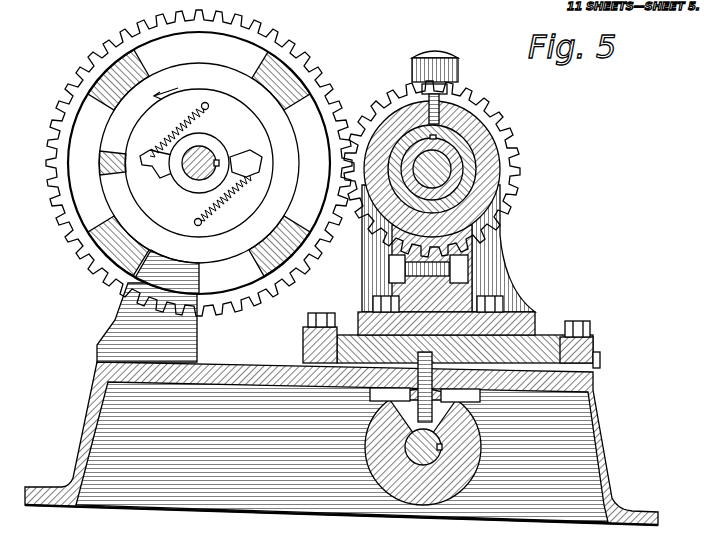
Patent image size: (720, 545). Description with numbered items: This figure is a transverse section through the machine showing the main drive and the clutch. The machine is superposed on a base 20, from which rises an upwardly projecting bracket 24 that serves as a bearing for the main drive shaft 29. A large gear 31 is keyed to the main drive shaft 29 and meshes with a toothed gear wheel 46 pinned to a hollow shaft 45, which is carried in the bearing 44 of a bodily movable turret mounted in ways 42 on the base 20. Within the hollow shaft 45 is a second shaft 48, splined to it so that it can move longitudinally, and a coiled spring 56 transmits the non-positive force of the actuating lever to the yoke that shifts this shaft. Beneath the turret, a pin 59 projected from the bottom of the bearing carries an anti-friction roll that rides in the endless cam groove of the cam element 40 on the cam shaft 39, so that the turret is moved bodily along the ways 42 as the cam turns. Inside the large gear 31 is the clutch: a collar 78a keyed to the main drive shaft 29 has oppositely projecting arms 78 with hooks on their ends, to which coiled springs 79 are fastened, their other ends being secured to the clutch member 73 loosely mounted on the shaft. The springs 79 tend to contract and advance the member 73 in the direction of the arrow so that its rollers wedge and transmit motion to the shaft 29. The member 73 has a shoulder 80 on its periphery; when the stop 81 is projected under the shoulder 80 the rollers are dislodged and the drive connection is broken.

The base 20 is at (602, 436).
The upwardly projecting bracket 24 is at (198, 340).
The main drive shaft 29 is at (218, 141).
The large gear 31 is at (272, 35).
The cam shaft 39 is at (372, 460).
The cam element 40 is at (478, 462).
The ways 42 is at (288, 360).
The bearing 44 is at (478, 108).
The hollow shaft 45 is at (436, 169).
The toothed gear wheel 46 is at (503, 180).
The second shaft 48 is at (492, 132).
The coiled spring 56 is at (482, 412).
The pin 59 is at (371, 400).
The clutch member 73 is at (207, 201).
The arm 78 is at (241, 157).
The collar 78a is at (200, 136).
The coiled spring 79 is at (179, 125).
The shoulder 80 is at (199, 163).
The stop 81 is at (110, 176).